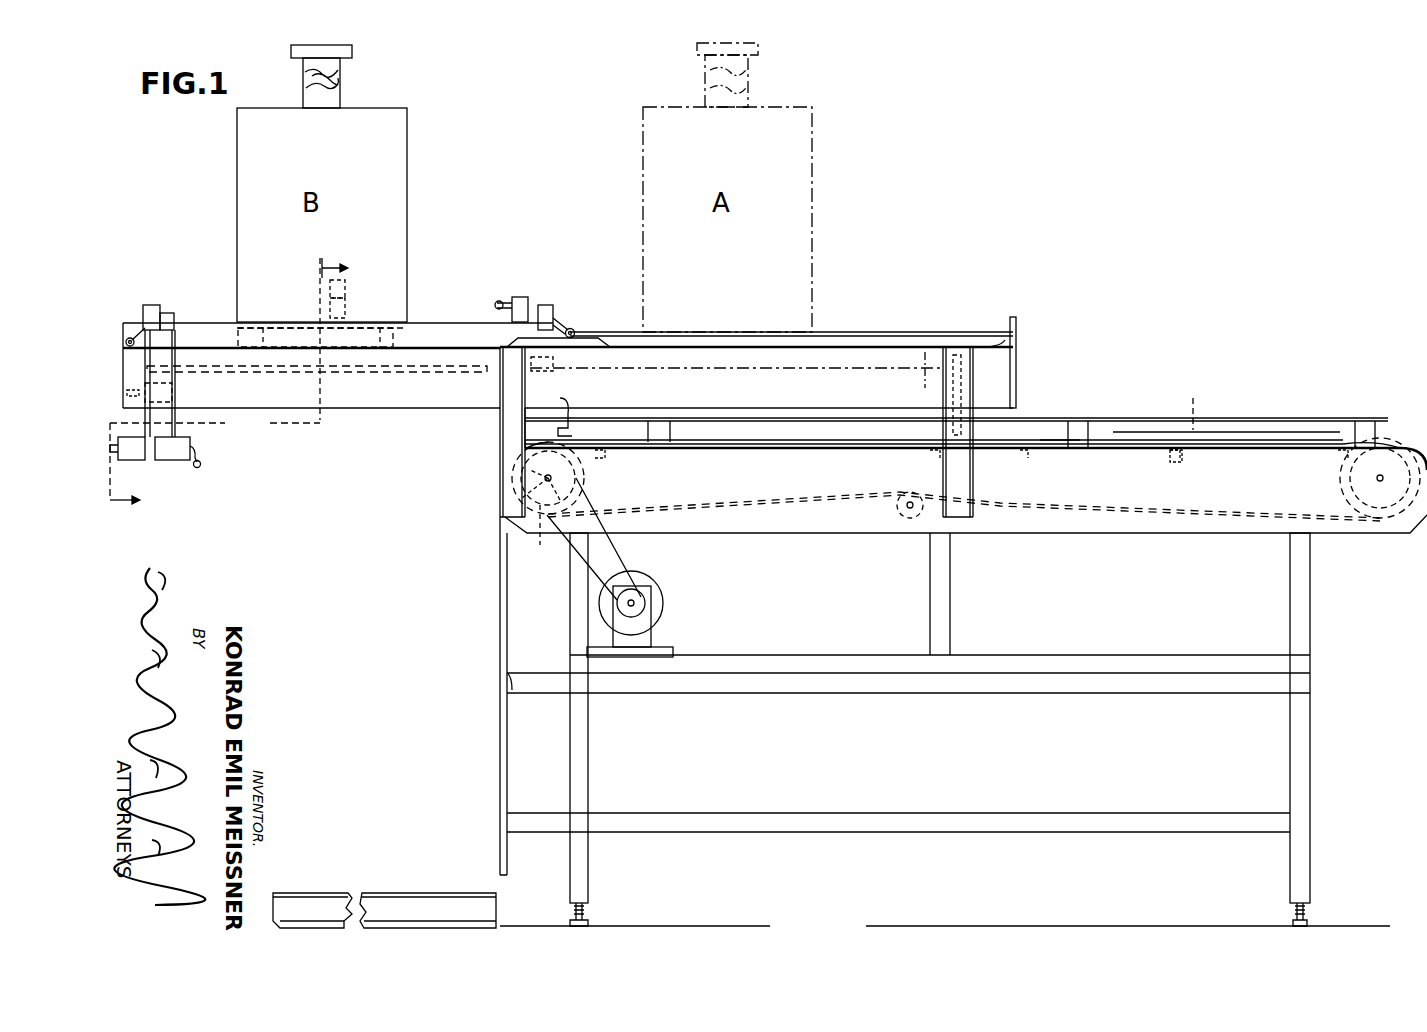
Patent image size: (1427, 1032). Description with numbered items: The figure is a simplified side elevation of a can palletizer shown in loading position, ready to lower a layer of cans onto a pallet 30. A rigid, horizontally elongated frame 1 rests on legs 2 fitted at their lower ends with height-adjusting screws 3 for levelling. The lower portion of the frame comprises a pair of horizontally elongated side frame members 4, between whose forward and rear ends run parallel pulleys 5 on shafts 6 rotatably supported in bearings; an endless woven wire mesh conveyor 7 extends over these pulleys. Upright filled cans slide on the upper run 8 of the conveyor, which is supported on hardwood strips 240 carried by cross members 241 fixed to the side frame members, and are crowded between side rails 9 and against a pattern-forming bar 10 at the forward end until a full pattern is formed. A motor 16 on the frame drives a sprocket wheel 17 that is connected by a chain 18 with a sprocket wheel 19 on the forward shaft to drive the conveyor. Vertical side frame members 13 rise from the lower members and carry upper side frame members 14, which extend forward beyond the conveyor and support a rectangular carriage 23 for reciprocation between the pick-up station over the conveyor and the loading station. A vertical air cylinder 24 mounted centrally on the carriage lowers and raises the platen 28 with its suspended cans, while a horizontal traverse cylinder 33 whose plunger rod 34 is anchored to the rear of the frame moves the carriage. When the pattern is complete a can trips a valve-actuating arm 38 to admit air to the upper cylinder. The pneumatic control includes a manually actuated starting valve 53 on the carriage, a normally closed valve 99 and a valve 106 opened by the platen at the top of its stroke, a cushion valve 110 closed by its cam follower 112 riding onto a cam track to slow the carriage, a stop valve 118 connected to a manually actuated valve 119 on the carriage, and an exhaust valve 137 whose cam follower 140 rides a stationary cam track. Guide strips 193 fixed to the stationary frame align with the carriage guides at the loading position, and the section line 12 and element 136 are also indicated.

The frame 1 is at (1312, 608).
The legs 2 is at (590, 722).
The height-adjusting screws 3 is at (586, 912).
The side frame members 4 is at (1058, 542).
The pulleys 5 is at (585, 470).
The shafts 6 is at (576, 488).
The conveyor 7 is at (1222, 418).
The upper run 8 is at (1268, 428).
The side rails 9 is at (1068, 418).
The pattern-forming bar 10 is at (554, 406).
The section line 12 is at (229, 386).
The vertical side frame members 13 is at (500, 432).
The upper side frame members 14 is at (1016, 355).
The motor 16 is at (663, 604).
The sprocket wheel 17 is at (641, 598).
The chain 18 is at (620, 560).
The sprocket wheel 19 is at (535, 522).
The carriage 23 is at (428, 322).
The air cylinder 24 is at (340, 72).
The platen 28 is at (442, 374).
The pallet 30 is at (414, 893).
The traverse cylinder 33 is at (460, 324).
The plunger rod 34 is at (858, 330).
The valve-actuating arm 38 is at (961, 392).
The starting valve 53 is at (183, 461).
The mechanically actuatable valve 99 is at (345, 290).
The mechanically-actuated valve 106 is at (345, 308).
The cushion valve 110 is at (549, 305).
The cam follower 112 is at (575, 328).
The stop valve 118 is at (172, 392).
The manually-actuated valve 119 is at (135, 460).
The control valve 136 is at (516, 296).
The mechanically actuatable valve 137 is at (150, 305).
The cam follower 140 is at (126, 332).
The guide strips 193 is at (498, 618).
The hardwood strips 240 is at (1118, 432).
The cross members 241 is at (1180, 448).